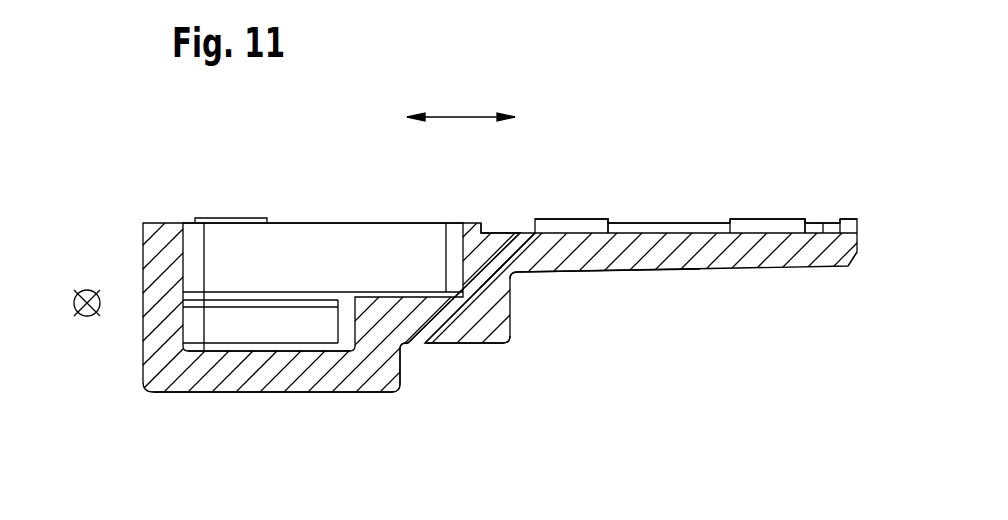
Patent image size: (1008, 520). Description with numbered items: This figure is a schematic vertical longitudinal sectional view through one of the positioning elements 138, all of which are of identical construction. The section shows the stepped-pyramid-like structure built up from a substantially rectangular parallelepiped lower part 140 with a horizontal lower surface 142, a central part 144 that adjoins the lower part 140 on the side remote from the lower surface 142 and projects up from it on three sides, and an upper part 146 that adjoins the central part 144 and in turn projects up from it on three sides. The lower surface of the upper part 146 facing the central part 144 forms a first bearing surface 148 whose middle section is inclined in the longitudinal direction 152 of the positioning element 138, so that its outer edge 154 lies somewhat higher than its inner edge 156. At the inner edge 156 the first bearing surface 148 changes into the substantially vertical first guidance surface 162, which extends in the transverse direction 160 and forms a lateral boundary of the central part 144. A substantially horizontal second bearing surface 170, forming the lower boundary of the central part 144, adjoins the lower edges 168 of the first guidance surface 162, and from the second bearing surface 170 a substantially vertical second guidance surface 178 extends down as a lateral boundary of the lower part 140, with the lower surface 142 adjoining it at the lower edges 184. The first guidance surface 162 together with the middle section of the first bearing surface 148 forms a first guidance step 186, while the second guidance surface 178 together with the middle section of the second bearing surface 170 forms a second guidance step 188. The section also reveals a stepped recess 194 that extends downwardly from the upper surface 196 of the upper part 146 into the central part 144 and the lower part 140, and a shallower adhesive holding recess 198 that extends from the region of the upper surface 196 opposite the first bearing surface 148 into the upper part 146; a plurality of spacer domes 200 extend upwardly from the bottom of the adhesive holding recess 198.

The positioning element 138 is at (152, 213).
The lower part 140 is at (260, 383).
The lower surface 142 is at (207, 400).
The central part 144 is at (457, 327).
The upper part 146 is at (540, 255).
The first bearing surface 148 is at (704, 272).
The longitudinal direction 152 is at (462, 115).
The outer edge 154 is at (853, 258).
The inner edge 156 is at (516, 276).
The transverse direction 160 is at (87, 318).
The first guidance surface 162 is at (516, 308).
The lower edges 168 is at (508, 343).
The second bearing surface 170 is at (480, 344).
The second guidance surface 178 is at (411, 370).
The lower edges 184 is at (398, 387).
The first guidance step 186 is at (547, 283).
The second guidance step 188 is at (420, 362).
The stepped recess 194 is at (350, 240).
The upper surface 196 is at (466, 222).
The adhesive holding recess 198 is at (673, 232).
The spacer domes 200 is at (598, 228).